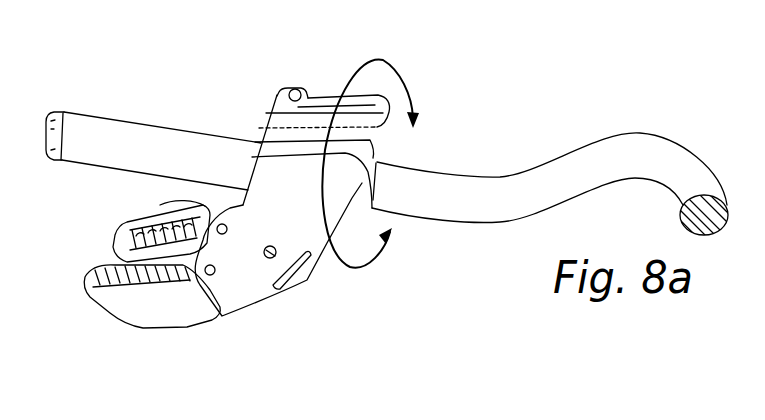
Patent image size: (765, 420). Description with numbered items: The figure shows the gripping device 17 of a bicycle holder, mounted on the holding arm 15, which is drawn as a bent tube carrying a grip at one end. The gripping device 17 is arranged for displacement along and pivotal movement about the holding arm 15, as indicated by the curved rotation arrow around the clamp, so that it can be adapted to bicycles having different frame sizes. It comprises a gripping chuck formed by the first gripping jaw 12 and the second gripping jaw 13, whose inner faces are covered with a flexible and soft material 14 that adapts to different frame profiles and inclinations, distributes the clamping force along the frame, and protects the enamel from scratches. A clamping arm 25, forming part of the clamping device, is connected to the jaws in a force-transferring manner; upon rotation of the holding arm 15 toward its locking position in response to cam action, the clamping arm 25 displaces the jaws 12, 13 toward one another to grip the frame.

The first gripping jaw 12 is at (168, 222).
The second gripping jaw 13 is at (132, 303).
The flexible and soft material 14 is at (110, 260).
The holding arm 15 is at (495, 175).
The gripping device 17 is at (246, 111).
The clamping arm 25 is at (312, 90).